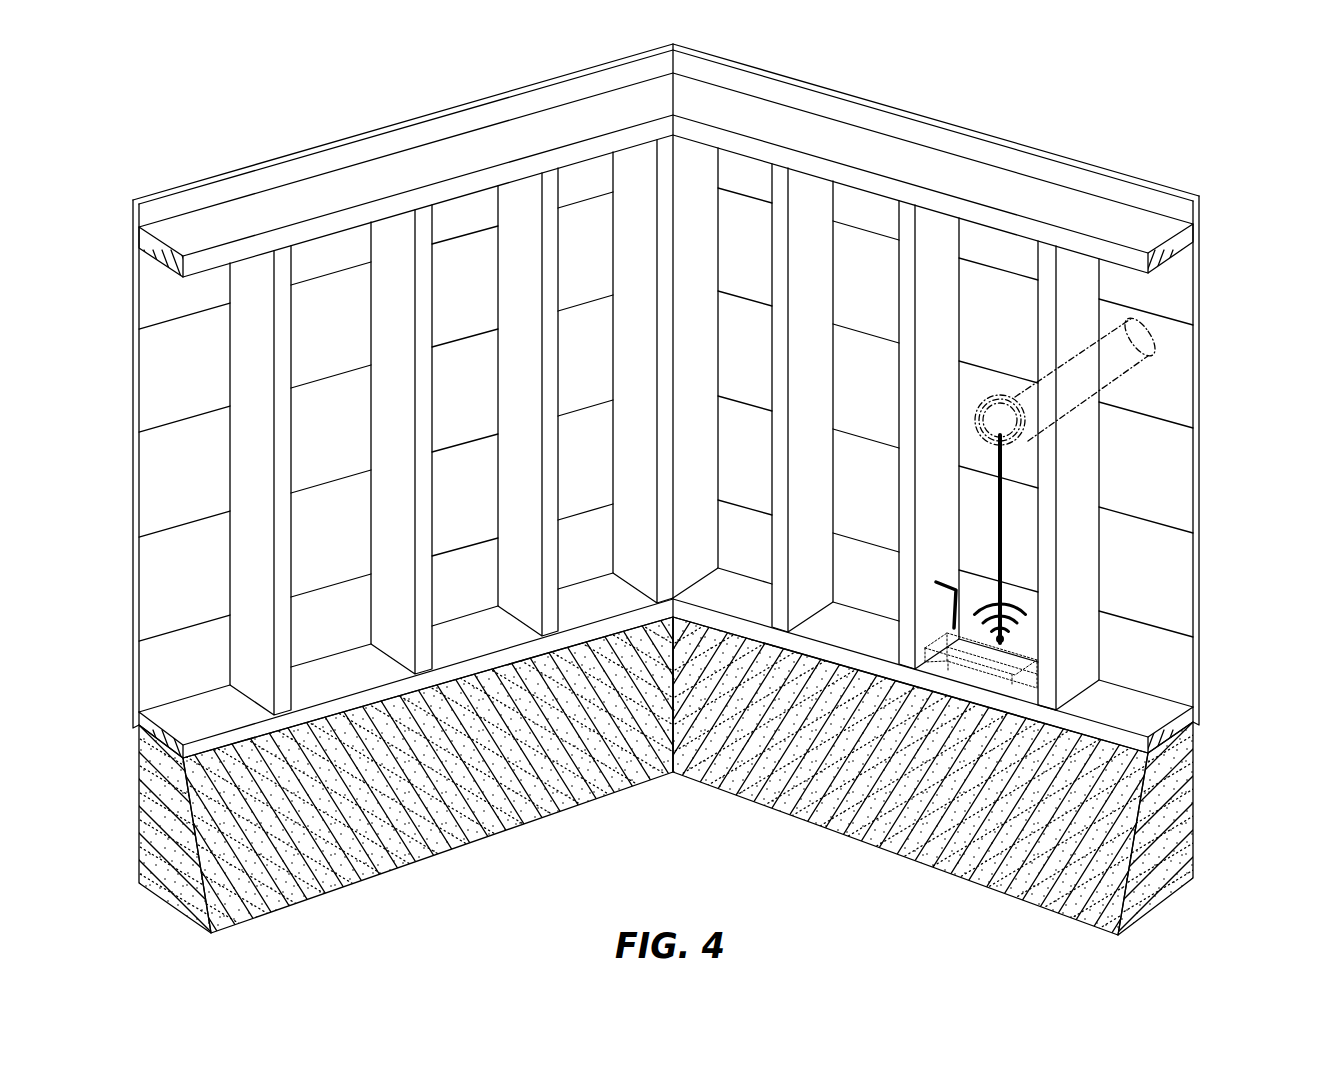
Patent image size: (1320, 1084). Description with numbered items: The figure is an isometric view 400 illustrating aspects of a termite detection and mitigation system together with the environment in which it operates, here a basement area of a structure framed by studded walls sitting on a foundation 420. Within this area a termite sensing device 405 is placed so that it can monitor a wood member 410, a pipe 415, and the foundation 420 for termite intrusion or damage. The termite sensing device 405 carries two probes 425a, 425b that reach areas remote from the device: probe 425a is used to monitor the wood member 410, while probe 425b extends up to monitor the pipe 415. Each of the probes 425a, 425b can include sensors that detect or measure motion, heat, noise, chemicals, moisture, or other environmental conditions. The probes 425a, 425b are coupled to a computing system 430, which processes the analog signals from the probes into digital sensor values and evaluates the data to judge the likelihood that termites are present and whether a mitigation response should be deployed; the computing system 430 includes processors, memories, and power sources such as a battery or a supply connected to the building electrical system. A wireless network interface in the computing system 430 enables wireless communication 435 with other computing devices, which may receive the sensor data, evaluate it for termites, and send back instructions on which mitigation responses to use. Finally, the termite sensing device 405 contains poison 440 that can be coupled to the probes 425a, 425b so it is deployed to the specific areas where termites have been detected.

The isometric view 400 is at (702, 408).
The termite sensing device 405 is at (1041, 750).
The wood member 410 is at (937, 494).
The pipe 415 is at (1030, 397).
The foundation 420 is at (1198, 768).
The probe 425a is at (958, 597).
The probe 425b is at (1003, 507).
The computing system 430 is at (1012, 674).
The wireless communication 435 is at (1023, 607).
The poison 440 is at (948, 668).